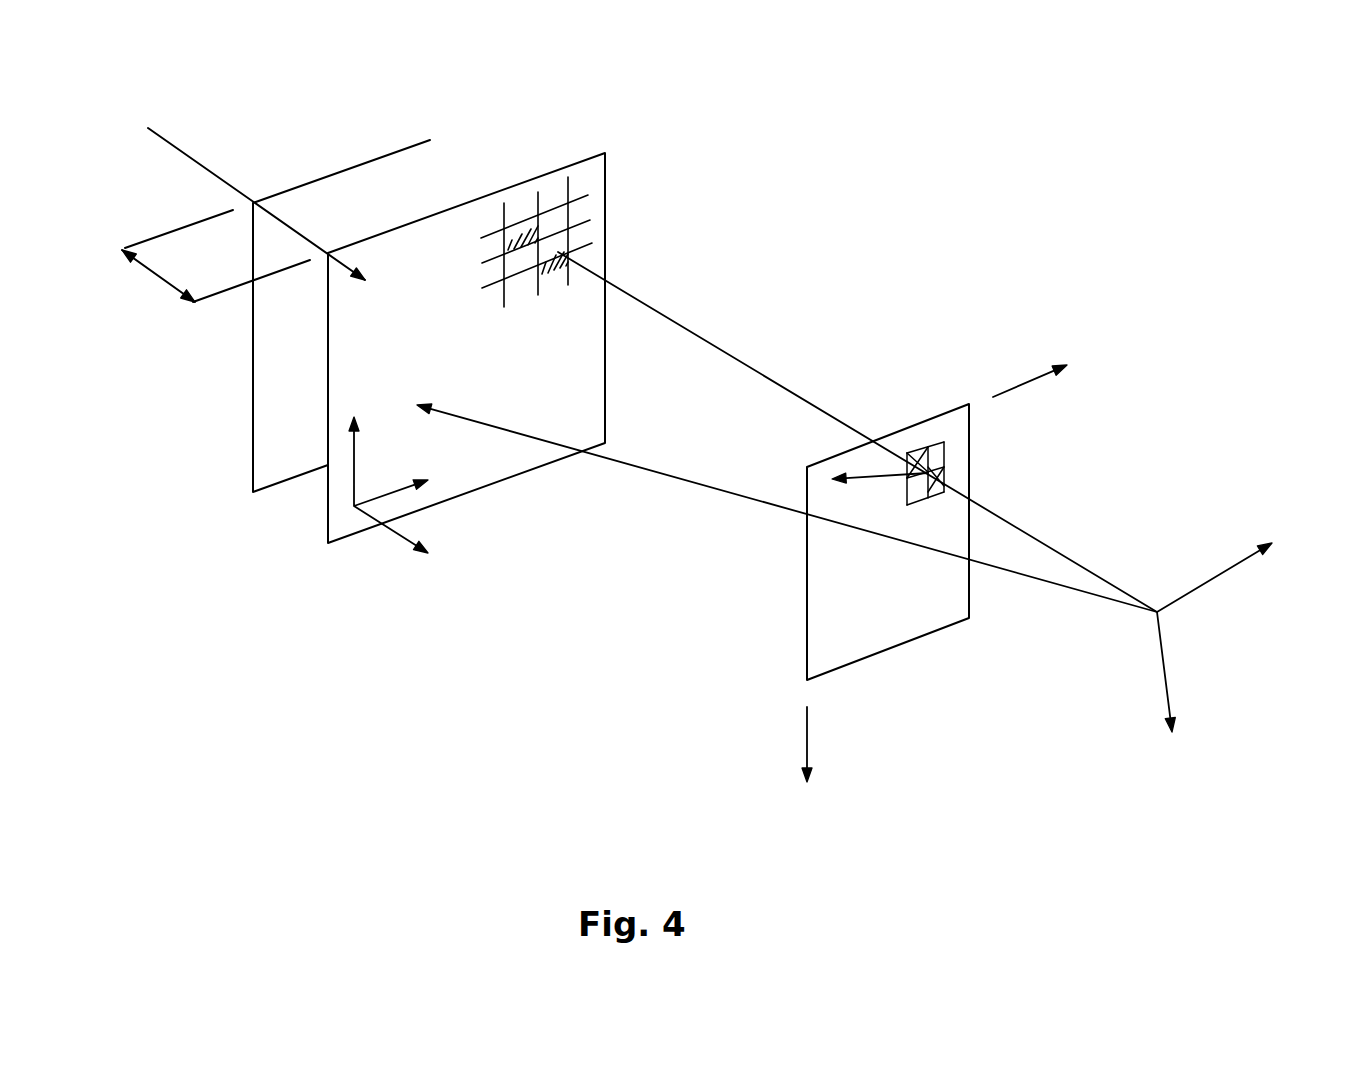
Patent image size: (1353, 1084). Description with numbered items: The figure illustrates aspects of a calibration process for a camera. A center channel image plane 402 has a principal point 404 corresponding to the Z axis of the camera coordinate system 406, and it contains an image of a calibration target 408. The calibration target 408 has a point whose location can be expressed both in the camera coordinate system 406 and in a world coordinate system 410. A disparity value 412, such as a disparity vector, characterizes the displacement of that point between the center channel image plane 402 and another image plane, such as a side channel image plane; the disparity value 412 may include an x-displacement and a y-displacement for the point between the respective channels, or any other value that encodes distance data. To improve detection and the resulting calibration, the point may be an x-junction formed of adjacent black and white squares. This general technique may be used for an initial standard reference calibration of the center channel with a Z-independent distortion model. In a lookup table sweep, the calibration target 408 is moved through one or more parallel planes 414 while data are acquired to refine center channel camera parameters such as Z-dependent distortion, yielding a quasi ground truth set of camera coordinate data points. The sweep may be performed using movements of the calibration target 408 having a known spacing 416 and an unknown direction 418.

The center channel image plane 402 is at (902, 427).
The principal point 404 is at (855, 528).
The camera coordinate system 406 is at (1208, 582).
The calibration target 408 is at (610, 202).
The world coordinate system 410 is at (390, 532).
The disparity value 412 is at (867, 478).
The parallel planes 414 is at (388, 152).
The known spacing 416 is at (158, 277).
The unknown direction 418 is at (148, 135).